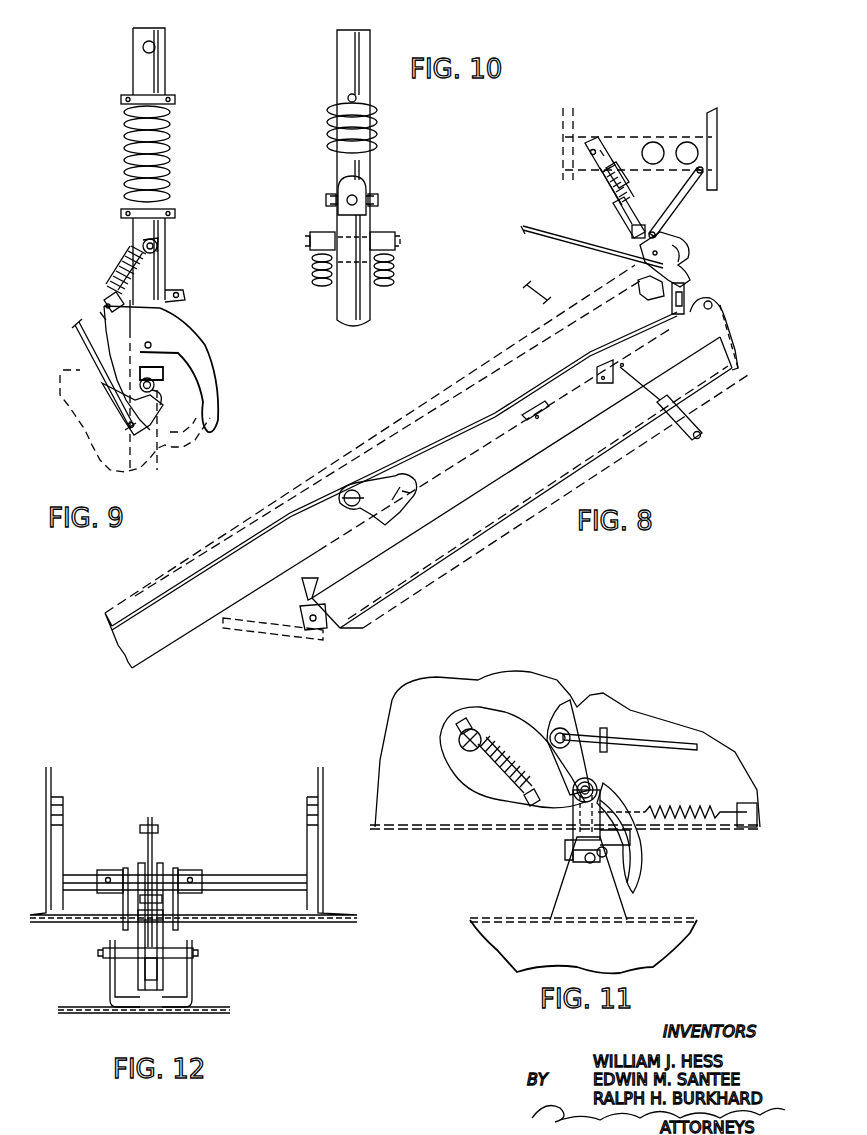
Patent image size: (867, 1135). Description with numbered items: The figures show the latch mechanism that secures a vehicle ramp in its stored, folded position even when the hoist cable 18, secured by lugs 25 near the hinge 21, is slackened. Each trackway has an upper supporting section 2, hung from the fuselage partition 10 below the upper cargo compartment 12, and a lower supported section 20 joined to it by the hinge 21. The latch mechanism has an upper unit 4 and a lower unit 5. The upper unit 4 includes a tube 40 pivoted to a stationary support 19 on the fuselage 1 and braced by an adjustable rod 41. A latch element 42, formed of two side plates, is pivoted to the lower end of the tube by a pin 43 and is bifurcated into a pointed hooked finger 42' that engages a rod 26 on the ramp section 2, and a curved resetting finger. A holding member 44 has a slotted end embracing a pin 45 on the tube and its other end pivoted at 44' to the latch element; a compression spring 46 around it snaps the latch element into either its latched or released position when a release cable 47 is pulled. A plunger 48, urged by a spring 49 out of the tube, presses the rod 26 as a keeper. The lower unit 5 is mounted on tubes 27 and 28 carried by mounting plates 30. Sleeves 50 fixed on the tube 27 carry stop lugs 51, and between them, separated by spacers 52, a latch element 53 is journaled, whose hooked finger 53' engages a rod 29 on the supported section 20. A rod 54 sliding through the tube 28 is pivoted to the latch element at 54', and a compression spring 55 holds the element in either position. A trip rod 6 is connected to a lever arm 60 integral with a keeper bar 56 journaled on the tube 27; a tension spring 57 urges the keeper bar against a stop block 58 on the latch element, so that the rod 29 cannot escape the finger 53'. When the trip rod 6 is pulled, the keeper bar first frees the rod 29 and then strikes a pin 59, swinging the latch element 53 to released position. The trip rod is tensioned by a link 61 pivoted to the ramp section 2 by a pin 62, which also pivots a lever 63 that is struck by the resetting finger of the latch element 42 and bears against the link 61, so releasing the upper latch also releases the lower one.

In FIG. 8, the fuselage 1 is at (712, 120).
In FIG. 8, the upper ramp section 2 is at (170, 630).
In FIG. 11, the upper ramp section 2 is at (410, 829).
In FIG. 12, the upper ramp section 2 is at (52, 775).
In FIG. 8, the upper latch unit 4 is at (595, 206).
In FIG. 8, the lower latch unit 5 is at (368, 532).
In FIG. 11, the lower latch unit 5 is at (629, 716).
In FIG. 8, the trip rod 6 is at (430, 445).
In FIG. 11, the trip rod 6 is at (675, 745).
In FIG. 12, the trip rod 6 is at (155, 818).
In FIG. 9, the fuselage partition 10 is at (228, 50).
In FIG. 11, the upper cargo compartment 12 is at (513, 663).
In FIG. 8, the cable 18 is at (530, 292).
In FIG. 8, the stationary support 19 is at (624, 140).
In FIG. 8, the lower ramp section 20 is at (430, 555).
In FIG. 11, the lower ramp section 20 is at (694, 918).
In FIG. 12, the lower ramp section 20 is at (228, 1011).
In FIG. 8, the hinge 21 is at (715, 325).
In FIG. 8, the lugs 25 is at (702, 430).
In FIG. 9, the rod 26 is at (160, 396).
In FIG. 11, the tube 27 is at (600, 800).
In FIG. 12, the tube 27 is at (258, 875).
In FIG. 11, the tube 28 is at (462, 752).
In FIG. 11, the rod 29 is at (562, 906).
In FIG. 12, the rod 29 is at (180, 975).
In FIG. 11, the mounting plates 30 is at (450, 722).
In FIG. 12, the mounting plates 30 is at (307, 800).
In FIG. 9, the tube 40 is at (166, 78).
In FIG. 10, the tube 40 is at (337, 74).
In FIG. 8, the tube 40 is at (592, 146).
In FIG. 8, the rod 41 is at (680, 200).
In FIG. 9, the latch element 42 is at (162, 381).
In FIG. 8, the latch element 42 is at (676, 249).
In FIG. 9, the ramp-engaging finger 42' is at (130, 421).
In FIG. 8, the ramp-engaging finger 42' is at (623, 278).
In FIG. 9, the pin 43 is at (152, 346).
In FIG. 8, the pin 43 is at (640, 250).
In FIG. 9, the latch element holding member 44 is at (96, 279).
In FIG. 10, the latch element holding member 44 is at (387, 235).
In FIG. 9, the pivot 44' is at (80, 294).
In FIG. 9, the pin 45 is at (158, 246).
In FIG. 10, the pin 45 is at (312, 238).
In FIG. 9, the compression spring 46 is at (132, 255).
In FIG. 10, the compression spring 46 is at (394, 268).
In FIG. 9, the release cable 47 is at (82, 345).
In FIG. 8, the release cable 47 is at (545, 246).
In FIG. 9, the plunger 48 is at (155, 379).
In FIG. 10, the plunger 48 is at (370, 320).
In FIG. 9, the spring 49 is at (172, 131).
In FIG. 10, the spring 49 is at (327, 128).
In FIG. 8, the spring 49 is at (626, 192).
In FIG. 12, the sleeves 50 is at (110, 870).
In FIG. 11, the stop lugs 51 is at (593, 842).
In FIG. 12, the stop lugs 51 is at (122, 928).
In FIG. 12, the spacers 52 is at (160, 868).
In FIG. 11, the latch element 53 is at (556, 838).
In FIG. 12, the latch element 53 is at (170, 959).
In FIG. 11, the ramp-engaging finger 53' is at (556, 874).
In FIG. 12, the ramp-engaging finger 53' is at (109, 964).
In FIG. 11, the rod 54 is at (437, 730).
In FIG. 11, the pivot 54' is at (492, 803).
In FIG. 11, the compression spring 55 is at (485, 788).
In FIG. 11, the keeper bar 56 is at (585, 860).
In FIG. 12, the keeper bar 56 is at (152, 896).
In FIG. 11, the spring 57 is at (690, 808).
In FIG. 11, the stop block 58 is at (630, 840).
In FIG. 11, the pin 59 is at (565, 846).
In FIG. 12, the pin 59 is at (138, 914).
In FIG. 11, the lever arm 60 is at (565, 700).
In FIG. 12, the lever arm 60 is at (145, 828).
In FIG. 8, the link 61 is at (713, 305).
In FIG. 8, the pin 62 is at (690, 297).
In FIG. 8, the lever 63 is at (688, 283).